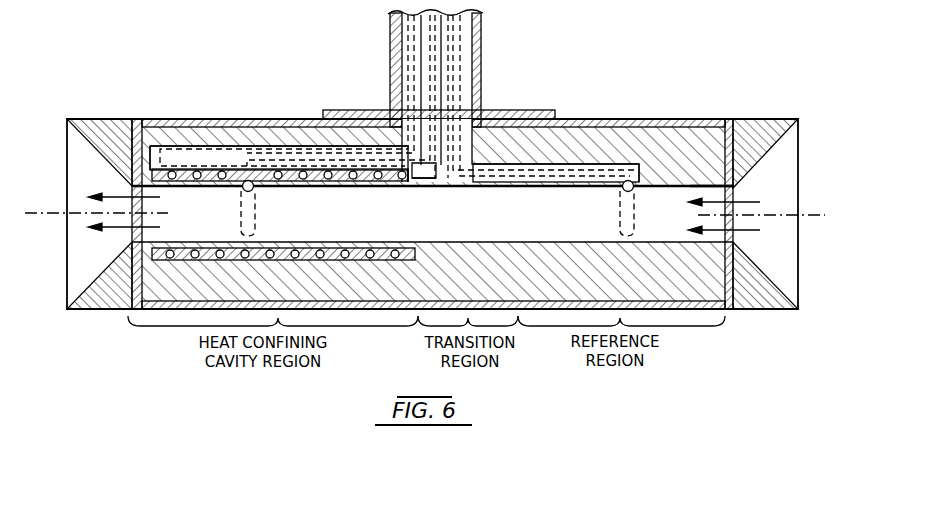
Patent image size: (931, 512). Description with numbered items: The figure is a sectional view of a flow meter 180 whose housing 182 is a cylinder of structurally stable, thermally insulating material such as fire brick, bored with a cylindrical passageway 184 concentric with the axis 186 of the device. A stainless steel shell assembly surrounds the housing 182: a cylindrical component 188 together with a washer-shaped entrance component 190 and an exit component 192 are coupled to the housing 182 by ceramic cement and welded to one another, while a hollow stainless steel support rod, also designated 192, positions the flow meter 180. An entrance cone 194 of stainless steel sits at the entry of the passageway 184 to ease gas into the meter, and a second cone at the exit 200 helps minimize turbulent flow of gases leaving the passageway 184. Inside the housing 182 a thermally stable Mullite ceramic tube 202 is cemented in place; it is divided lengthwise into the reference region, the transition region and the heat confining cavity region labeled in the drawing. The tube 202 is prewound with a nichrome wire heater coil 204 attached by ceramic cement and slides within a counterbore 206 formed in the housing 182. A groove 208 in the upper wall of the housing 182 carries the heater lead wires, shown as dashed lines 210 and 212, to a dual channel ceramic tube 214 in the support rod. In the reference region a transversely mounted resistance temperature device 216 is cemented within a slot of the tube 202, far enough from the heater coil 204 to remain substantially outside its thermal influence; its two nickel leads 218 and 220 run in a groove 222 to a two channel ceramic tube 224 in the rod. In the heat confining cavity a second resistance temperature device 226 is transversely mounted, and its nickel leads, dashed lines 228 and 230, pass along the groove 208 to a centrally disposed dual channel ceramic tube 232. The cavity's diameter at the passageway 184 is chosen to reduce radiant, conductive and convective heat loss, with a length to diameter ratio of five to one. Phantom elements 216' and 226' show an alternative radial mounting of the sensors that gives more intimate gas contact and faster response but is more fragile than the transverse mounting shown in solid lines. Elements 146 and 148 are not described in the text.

The lower outlet flare 146 is at (733, 243).
The lower inlet flare 148 is at (127, 237).
The flow meter 180 is at (712, 14).
The housing 182 is at (676, 141).
The passageway 184 is at (733, 190).
The axis 186 is at (58, 215).
The cylindrical component 188 is at (700, 304).
The entrance component 190 is at (733, 296).
The exit component / support mount or hollow rod 192 is at (127, 293).
The entrance cone 194 is at (760, 131).
The exit 200 is at (132, 187).
The ceramic tube 202 is at (690, 192).
The heater coil 204 is at (353, 180).
The counterbore 206 is at (166, 252).
The groove 208 is at (196, 158).
The lead wire 210 is at (176, 150).
The lead wire 212 is at (412, 180).
The dual channel ceramic tube 214 is at (402, 72).
The resistance temperature device 216 is at (598, 199).
The radially oriented reference sensor 216' is at (598, 216).
The nickel lead 218 is at (512, 172).
The nickel lead 220 is at (537, 170).
The groove 222 is at (604, 163).
The two channel ceramic tube 224 is at (458, 43).
The resistance temperature device 226 is at (273, 200).
The radially oriented cavity sensor 226' is at (274, 216).
The nickel lead 228 is at (287, 155).
The nickel lead 230 is at (308, 157).
The dual channel ceramic tube 232 is at (421, 42).